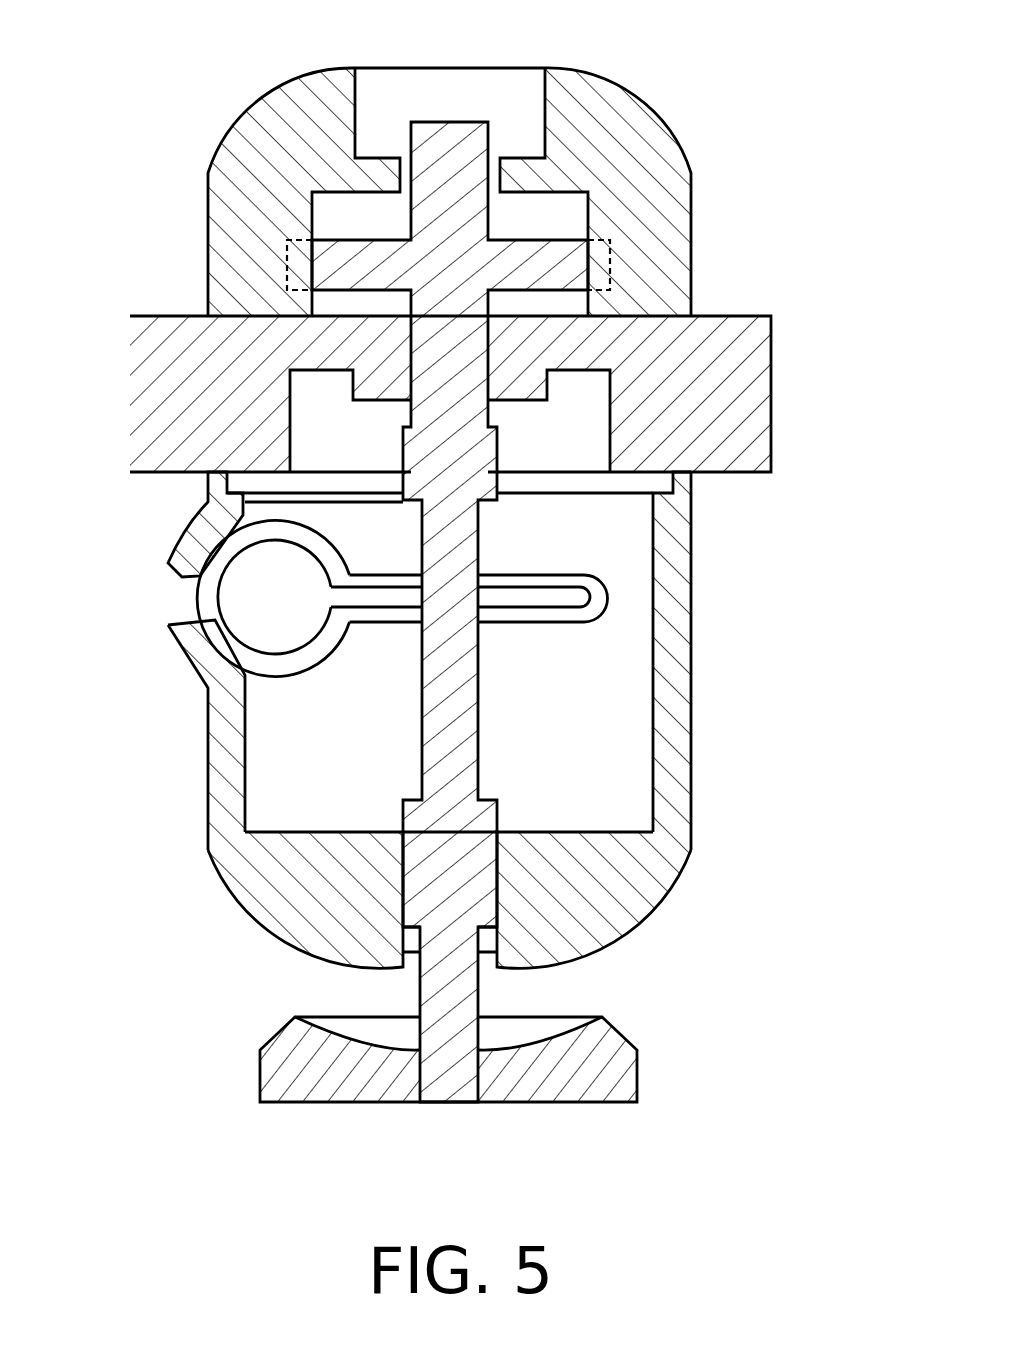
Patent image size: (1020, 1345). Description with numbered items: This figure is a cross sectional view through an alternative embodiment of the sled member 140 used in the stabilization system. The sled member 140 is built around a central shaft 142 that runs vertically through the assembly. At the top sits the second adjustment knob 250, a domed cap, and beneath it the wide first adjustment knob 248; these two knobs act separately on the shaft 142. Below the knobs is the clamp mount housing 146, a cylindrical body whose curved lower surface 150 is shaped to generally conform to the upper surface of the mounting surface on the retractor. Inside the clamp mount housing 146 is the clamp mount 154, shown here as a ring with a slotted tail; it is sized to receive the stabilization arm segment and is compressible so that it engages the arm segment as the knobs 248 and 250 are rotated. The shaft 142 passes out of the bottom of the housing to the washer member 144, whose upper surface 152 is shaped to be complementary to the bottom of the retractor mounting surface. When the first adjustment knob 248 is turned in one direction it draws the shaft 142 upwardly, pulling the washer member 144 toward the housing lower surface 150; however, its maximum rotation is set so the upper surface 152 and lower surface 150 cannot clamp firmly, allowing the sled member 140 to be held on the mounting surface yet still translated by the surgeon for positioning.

The sled member 140 is at (213, 37).
The shaft 142 is at (481, 996).
The washer member 144 is at (443, 1068).
The clamp mount housing 146 is at (691, 736).
The lower surface 150 is at (248, 917).
The upper surface 152 is at (322, 1017).
The clamp mount 154 is at (188, 600).
The first adjustment knob 248 is at (771, 404).
The second adjustment knob 250 is at (641, 101).